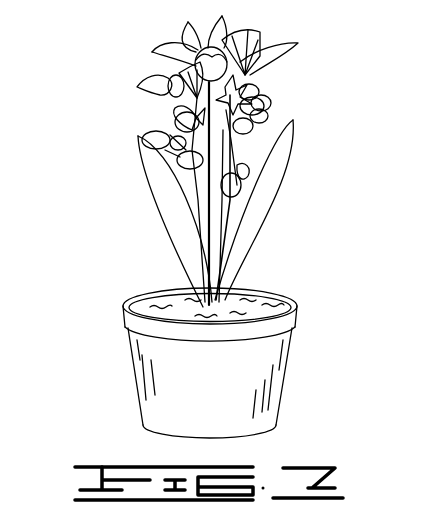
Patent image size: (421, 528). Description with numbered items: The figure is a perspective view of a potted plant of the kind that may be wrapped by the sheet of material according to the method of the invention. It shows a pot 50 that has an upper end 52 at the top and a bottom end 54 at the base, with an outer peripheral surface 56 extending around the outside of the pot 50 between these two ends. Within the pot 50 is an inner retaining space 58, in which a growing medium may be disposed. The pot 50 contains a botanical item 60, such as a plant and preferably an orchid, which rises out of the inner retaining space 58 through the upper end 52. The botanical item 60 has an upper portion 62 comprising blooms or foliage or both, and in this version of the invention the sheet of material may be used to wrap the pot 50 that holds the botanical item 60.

The pot 50 is at (95, 322).
The upper end 52 is at (140, 293).
The bottom end 54 is at (262, 432).
The outer peripheral surface 56 is at (257, 363).
The inner retaining space 58 is at (262, 313).
The botanical item 60 is at (318, 165).
The upper portion 62 is at (270, 30).